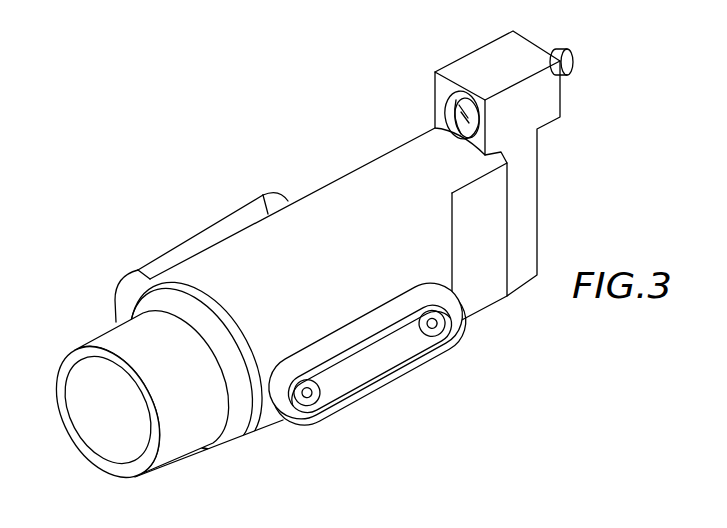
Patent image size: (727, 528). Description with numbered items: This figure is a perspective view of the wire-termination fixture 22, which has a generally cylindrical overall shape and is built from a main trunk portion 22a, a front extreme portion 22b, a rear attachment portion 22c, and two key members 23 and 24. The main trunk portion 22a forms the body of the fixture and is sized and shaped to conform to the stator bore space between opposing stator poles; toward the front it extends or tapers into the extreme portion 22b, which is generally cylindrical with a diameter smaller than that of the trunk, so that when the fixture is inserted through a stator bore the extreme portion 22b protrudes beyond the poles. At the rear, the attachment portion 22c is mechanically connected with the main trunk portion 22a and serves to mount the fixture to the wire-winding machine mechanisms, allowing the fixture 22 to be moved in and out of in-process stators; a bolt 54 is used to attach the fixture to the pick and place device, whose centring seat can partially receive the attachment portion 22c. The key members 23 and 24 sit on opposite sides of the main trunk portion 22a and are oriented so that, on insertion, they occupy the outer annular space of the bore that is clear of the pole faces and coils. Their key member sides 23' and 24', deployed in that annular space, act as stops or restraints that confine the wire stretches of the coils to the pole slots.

The wire-termination fixture 22 is at (233, 140).
The main trunk portion 22a is at (370, 184).
The front extreme portion 22b is at (182, 433).
The rear attachment portion 22c is at (477, 73).
The key member 23 is at (367, 370).
The key member side 23' is at (374, 335).
The key member 24 is at (174, 367).
The key member side 24' is at (213, 231).
The bolt 54 is at (572, 55).